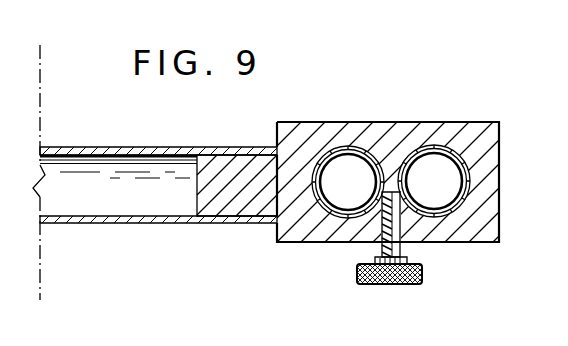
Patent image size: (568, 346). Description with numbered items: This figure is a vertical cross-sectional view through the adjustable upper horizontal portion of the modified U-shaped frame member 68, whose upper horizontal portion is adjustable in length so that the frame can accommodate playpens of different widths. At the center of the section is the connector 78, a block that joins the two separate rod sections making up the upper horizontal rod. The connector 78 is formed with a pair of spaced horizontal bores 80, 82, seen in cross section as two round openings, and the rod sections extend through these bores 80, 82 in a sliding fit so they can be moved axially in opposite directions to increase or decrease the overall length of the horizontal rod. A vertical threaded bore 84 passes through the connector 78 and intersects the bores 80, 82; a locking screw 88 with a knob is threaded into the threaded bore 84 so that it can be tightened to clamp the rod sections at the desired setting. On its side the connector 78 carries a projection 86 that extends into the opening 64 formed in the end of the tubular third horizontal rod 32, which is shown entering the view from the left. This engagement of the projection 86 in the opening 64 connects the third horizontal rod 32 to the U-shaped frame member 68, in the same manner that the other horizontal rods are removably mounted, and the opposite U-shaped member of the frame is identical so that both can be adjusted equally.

The third horizontal rod 32 is at (85, 148).
The opening 64 is at (254, 154).
The U-shaped frame member 68 is at (350, 185).
The connector 78 is at (477, 124).
The horizontal bore 80 is at (362, 147).
The horizontal bore 82 is at (432, 146).
The vertical threaded bore 84 is at (381, 231).
The projection 86 is at (230, 206).
The locking screw 88 is at (423, 267).